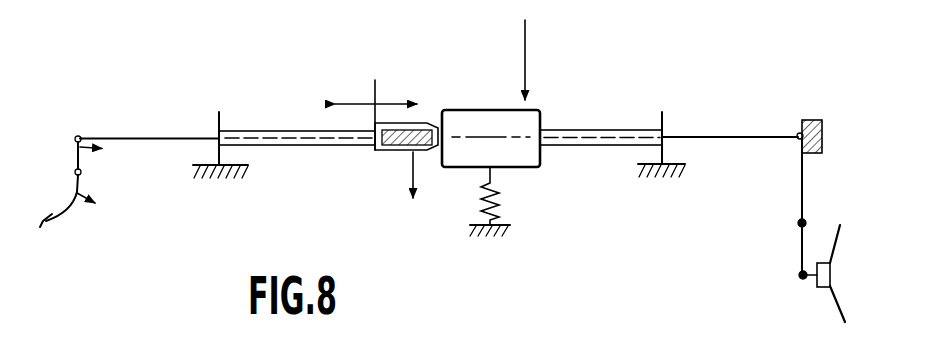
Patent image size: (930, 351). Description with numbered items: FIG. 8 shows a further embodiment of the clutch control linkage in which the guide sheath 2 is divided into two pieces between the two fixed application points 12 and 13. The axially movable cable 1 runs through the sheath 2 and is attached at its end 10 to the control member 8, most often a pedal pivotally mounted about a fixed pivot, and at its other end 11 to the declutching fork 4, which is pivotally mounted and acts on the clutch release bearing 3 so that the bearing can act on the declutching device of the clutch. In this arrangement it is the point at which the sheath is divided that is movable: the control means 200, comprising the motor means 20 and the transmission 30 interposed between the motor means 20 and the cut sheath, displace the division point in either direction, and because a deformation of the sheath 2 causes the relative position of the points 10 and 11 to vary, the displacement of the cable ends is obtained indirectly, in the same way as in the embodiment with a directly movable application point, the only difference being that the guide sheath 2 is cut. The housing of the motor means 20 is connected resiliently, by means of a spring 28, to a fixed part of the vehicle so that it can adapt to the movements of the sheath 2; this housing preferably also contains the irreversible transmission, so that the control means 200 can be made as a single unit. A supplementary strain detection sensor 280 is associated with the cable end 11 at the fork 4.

The cable 1 is at (134, 152).
The sheath 2 is at (294, 120).
The clutch release bearing 3 is at (818, 288).
The fork 4 is at (788, 175).
The control member 8 is at (82, 216).
The cable end 10 is at (77, 136).
The cable end 11 is at (802, 121).
The fixed application point 12 is at (217, 127).
The application point 13 is at (662, 120).
The motor means 20 is at (499, 102).
The spring 28 is at (500, 193).
The transmission 30 is at (392, 163).
The control means 200 is at (545, 94).
The supplementary strain detection sensor 280 is at (836, 128).